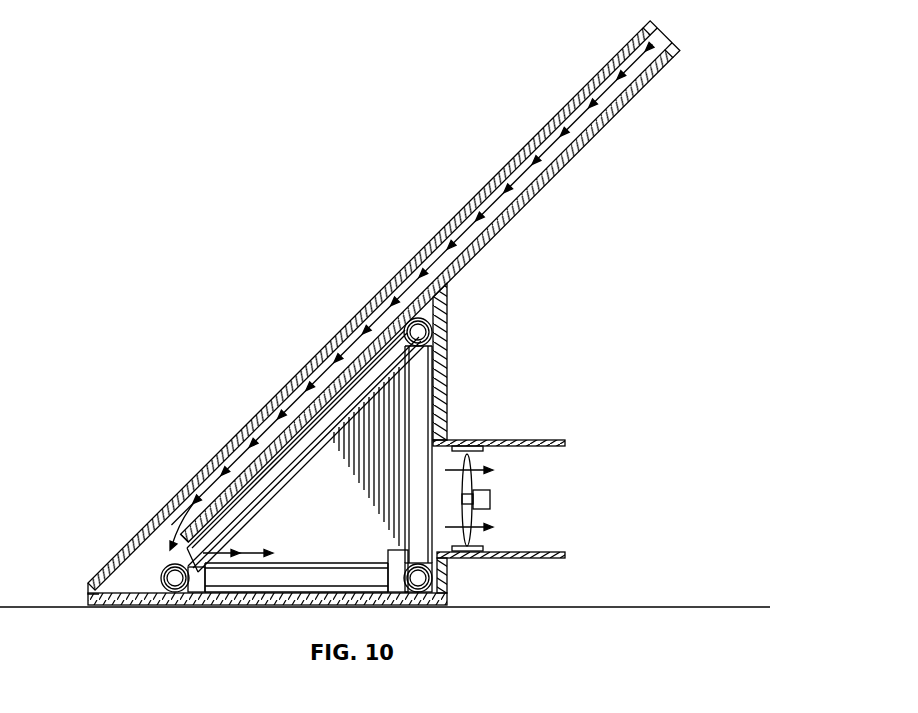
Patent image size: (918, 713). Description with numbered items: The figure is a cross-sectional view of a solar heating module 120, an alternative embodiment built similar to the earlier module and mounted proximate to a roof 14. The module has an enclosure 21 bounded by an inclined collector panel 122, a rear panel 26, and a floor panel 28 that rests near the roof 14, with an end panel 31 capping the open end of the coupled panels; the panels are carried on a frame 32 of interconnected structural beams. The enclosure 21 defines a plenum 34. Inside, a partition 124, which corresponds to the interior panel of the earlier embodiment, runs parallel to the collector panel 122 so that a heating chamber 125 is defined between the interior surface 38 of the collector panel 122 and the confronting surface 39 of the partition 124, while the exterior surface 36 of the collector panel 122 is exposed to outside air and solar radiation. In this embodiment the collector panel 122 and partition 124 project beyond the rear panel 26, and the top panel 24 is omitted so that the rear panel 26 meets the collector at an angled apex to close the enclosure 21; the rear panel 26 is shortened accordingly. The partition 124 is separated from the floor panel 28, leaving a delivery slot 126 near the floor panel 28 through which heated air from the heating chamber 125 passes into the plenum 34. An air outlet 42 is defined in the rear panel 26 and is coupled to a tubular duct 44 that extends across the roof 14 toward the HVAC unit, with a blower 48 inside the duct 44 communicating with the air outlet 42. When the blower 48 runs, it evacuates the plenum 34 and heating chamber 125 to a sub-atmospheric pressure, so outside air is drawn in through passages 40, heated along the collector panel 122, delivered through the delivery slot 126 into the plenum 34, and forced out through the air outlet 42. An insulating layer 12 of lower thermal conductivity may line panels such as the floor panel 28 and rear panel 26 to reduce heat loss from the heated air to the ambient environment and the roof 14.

The solar heating module 120 is at (236, 132).
The insulating layer 12 is at (656, 52).
The top panel 24 is at (658, 40).
The surface of the interior panel 39 is at (508, 195).
The interior surface of the collector panel 38 is at (475, 210).
The partition 124 is at (548, 187).
The enclosure 21 is at (428, 262).
The passages 40 is at (353, 335).
The collector panel 122 is at (318, 371).
The heating chamber 125 is at (245, 430).
The exterior surface of the collector panel 36 is at (206, 472).
The delivery slot 126 is at (147, 530).
The roof 14 is at (31, 606).
The frame 32 is at (415, 384).
The end panel 31 is at (388, 440).
The plenum 34 is at (303, 511).
The air outlet 42 is at (435, 547).
The tubular duct 44 is at (540, 440).
The blower 48 is at (492, 499).
The rear panel 26 is at (443, 421).
The floor panel 28 is at (370, 602).